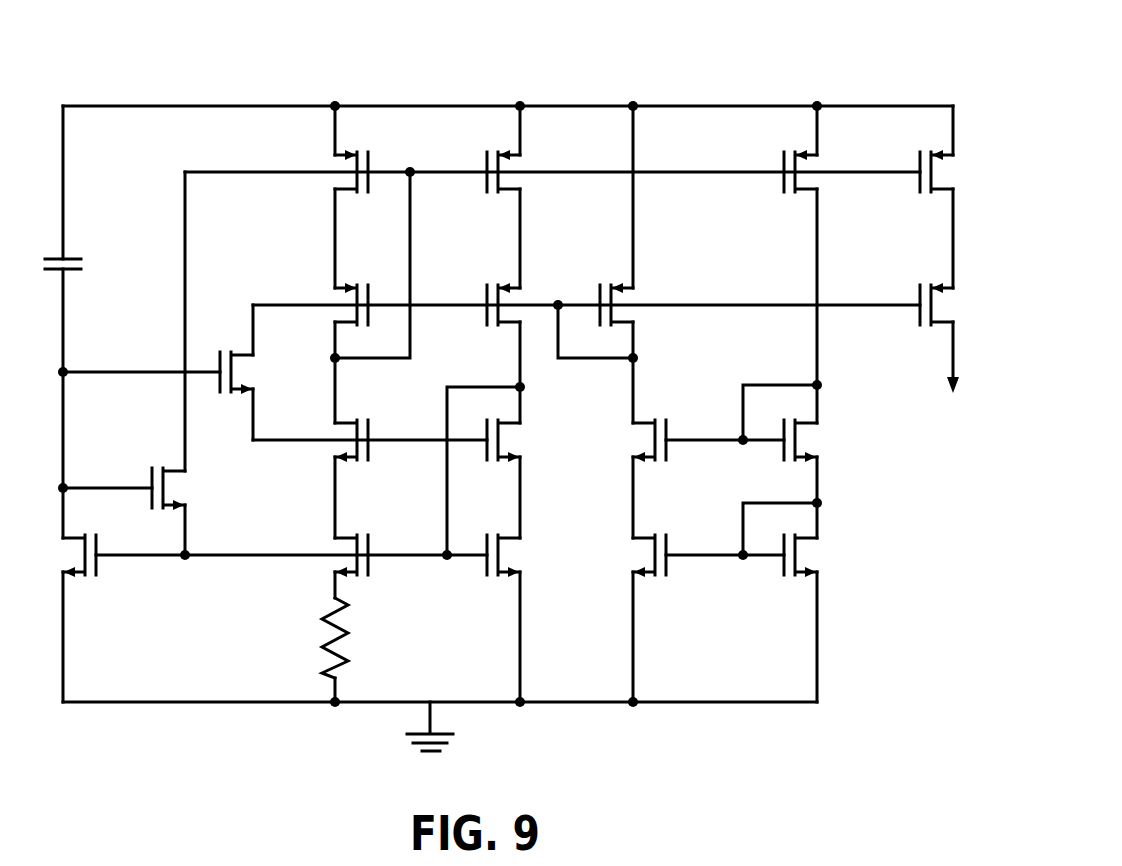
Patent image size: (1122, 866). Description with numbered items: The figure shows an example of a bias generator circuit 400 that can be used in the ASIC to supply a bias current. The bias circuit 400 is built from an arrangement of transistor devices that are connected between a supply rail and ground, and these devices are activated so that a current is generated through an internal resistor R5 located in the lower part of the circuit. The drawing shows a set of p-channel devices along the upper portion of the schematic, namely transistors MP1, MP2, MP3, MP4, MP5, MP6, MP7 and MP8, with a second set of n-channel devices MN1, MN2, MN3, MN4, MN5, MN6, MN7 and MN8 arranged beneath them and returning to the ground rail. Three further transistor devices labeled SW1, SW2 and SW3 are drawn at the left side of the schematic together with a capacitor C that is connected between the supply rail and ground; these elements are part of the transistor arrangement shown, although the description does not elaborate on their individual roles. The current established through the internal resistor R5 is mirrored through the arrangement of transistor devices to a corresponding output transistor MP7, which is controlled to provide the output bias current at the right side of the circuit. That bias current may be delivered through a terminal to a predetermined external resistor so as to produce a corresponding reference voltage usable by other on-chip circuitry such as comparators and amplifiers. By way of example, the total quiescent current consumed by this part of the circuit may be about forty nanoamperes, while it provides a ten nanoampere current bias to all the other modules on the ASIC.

The bias generator circuit 400 is at (868, 31).
The PMOS transistor MP1 is at (318, 294).
The PMOS transistor MP2 is at (539, 295).
The PMOS transistor MP3 is at (318, 160).
The PMOS transistor MP4 is at (539, 162).
The PMOS transistor MP5 is at (656, 295).
The PMOS transistor MP6 is at (767, 161).
The output transistor MP7 is at (902, 294).
The PMOS transistor MP8 is at (902, 160).
The NMOS transistor MN1 is at (316, 543).
The NMOS transistor MN2 is at (540, 548).
The NMOS transistor MN3 is at (316, 452).
The NMOS transistor MN4 is at (540, 452).
The NMOS transistor MN5 is at (673, 577).
The NMOS transistor MN6 is at (839, 577).
The NMOS transistor MN7 is at (673, 461).
The NMOS transistor MN8 is at (839, 461).
The switch transistor SW1 is at (149, 470).
The switch transistor SW2 is at (273, 377).
The switch transistor SW3 is at (103, 579).
The capacitor C is at (80, 266).
The internal resistor R5 is at (359, 638).